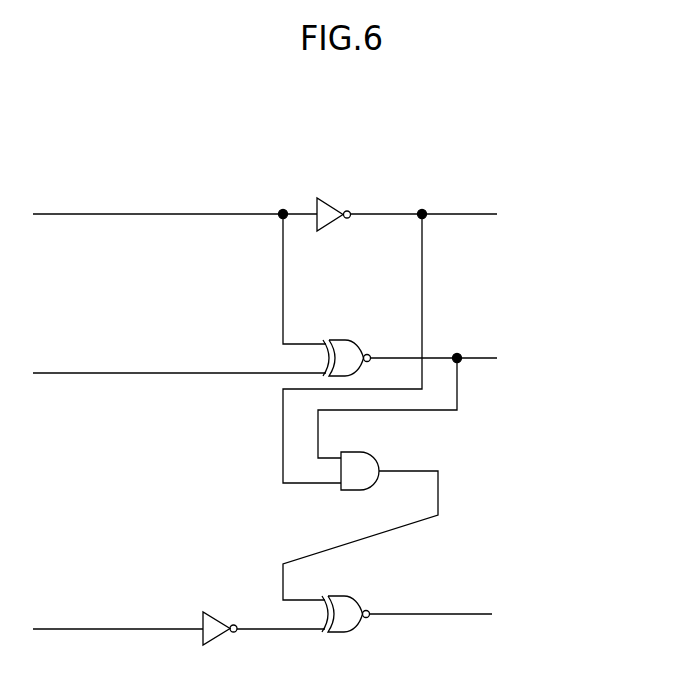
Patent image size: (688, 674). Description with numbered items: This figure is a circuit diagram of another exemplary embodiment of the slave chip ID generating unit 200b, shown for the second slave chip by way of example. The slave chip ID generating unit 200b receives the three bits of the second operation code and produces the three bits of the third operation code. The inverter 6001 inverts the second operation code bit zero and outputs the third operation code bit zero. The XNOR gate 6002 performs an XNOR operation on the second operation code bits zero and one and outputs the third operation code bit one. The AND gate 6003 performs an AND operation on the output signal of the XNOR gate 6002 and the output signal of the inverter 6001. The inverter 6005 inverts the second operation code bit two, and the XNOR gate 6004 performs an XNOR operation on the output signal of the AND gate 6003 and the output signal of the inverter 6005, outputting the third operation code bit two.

The slave chip ID generating unit 200b is at (117, 118).
The inverter 6001 is at (337, 206).
The XNOR gate 6002 is at (353, 341).
The AND gate 6003 is at (372, 453).
The XNOR gate 6004 is at (354, 599).
The inverter 6005 is at (221, 620).